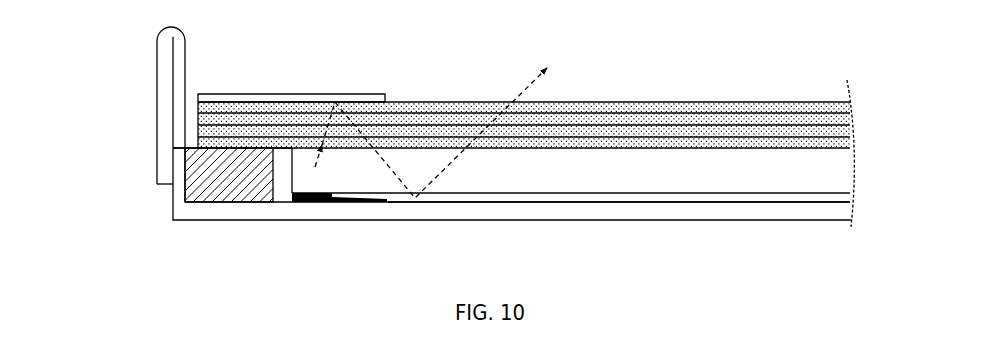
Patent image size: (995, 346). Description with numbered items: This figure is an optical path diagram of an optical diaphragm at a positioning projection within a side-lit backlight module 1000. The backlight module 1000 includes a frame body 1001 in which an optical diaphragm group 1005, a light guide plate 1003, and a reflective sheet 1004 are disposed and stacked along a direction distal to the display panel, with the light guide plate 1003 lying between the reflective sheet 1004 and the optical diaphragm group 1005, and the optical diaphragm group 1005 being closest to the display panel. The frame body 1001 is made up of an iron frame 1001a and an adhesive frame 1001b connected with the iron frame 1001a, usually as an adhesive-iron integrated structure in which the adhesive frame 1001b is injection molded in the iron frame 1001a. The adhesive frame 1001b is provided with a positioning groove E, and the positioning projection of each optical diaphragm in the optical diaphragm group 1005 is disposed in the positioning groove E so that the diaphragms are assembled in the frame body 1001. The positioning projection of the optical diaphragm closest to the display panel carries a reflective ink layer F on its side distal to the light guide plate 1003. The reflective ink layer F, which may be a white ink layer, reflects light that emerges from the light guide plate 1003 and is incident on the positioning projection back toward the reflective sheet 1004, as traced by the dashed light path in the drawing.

The backlight module 1000 is at (915, 128).
The frame body 1001 is at (93, 142).
The iron frame 1001a is at (180, 147).
The adhesive frame 1001b is at (198, 183).
The light guide plate 1003 is at (836, 178).
The reflective sheet 1004 is at (834, 198).
The optical diaphragm group 1005 is at (855, 107).
The positioning groove E is at (234, 107).
The reflective ink layer F is at (297, 93).